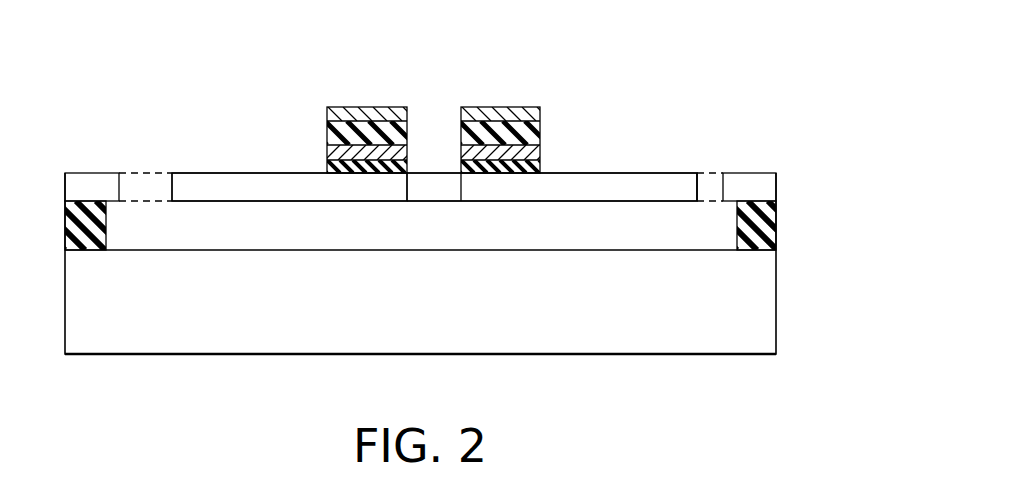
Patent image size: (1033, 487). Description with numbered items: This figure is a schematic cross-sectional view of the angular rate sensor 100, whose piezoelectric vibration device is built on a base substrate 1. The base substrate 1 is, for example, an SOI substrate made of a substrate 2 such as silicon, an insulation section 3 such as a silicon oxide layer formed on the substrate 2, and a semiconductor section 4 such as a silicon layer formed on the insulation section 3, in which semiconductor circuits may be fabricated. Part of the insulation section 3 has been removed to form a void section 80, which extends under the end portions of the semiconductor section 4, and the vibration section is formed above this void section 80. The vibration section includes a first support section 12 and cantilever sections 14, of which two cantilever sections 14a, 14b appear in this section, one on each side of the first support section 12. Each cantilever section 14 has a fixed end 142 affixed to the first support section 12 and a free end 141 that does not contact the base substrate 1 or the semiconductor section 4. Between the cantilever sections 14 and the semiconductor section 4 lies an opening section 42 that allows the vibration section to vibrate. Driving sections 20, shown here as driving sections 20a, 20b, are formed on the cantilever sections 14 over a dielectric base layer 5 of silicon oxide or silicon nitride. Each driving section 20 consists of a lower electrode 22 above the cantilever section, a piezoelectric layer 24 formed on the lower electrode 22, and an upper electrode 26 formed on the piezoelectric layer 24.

The angular rate sensor 100 is at (783, 83).
The base substrate 1 is at (817, 175).
The substrate 2 is at (778, 303).
The insulation section 3 is at (65, 231).
The semiconductor section 4 is at (65, 187).
The opening section 42 is at (145, 176).
The cantilever section 14 is at (429, 190).
The cantilever section 14a is at (240, 183).
The cantilever section 14b is at (627, 178).
The free end 141 is at (175, 186).
The fixed end 142 is at (406, 201).
The first support section 12 is at (432, 182).
The void section 80 is at (418, 234).
The driving section 20 is at (432, 126).
The driving section 20a is at (233, 80).
The driving section 20b is at (629, 80).
The base layer 5 is at (327, 167).
The lower electrode for driving section 22 is at (327, 153).
The piezoelectric layer for driving section 24 is at (327, 133).
The upper electrode for driving section 26 is at (327, 111).